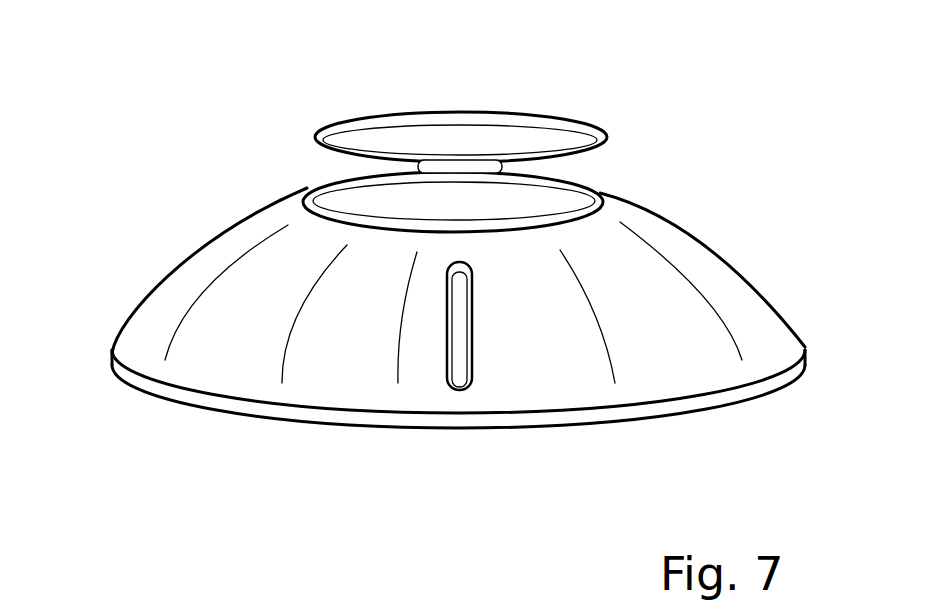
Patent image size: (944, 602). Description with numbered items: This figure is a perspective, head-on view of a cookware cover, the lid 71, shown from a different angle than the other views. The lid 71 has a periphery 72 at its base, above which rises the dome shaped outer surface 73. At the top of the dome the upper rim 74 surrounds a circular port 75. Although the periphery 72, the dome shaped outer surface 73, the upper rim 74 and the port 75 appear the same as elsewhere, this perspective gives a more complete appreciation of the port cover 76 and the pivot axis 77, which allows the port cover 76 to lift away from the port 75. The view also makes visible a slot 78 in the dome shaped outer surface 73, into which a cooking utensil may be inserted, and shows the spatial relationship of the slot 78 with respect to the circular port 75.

The lid 71 is at (763, 360).
The periphery 72 is at (257, 407).
The dome shaped outer surface 73 is at (202, 256).
The upper rim 74 is at (307, 193).
The port 75 is at (387, 198).
The port cover 76 is at (352, 130).
The pivot axis 77 is at (503, 168).
The slot 78 is at (460, 362).